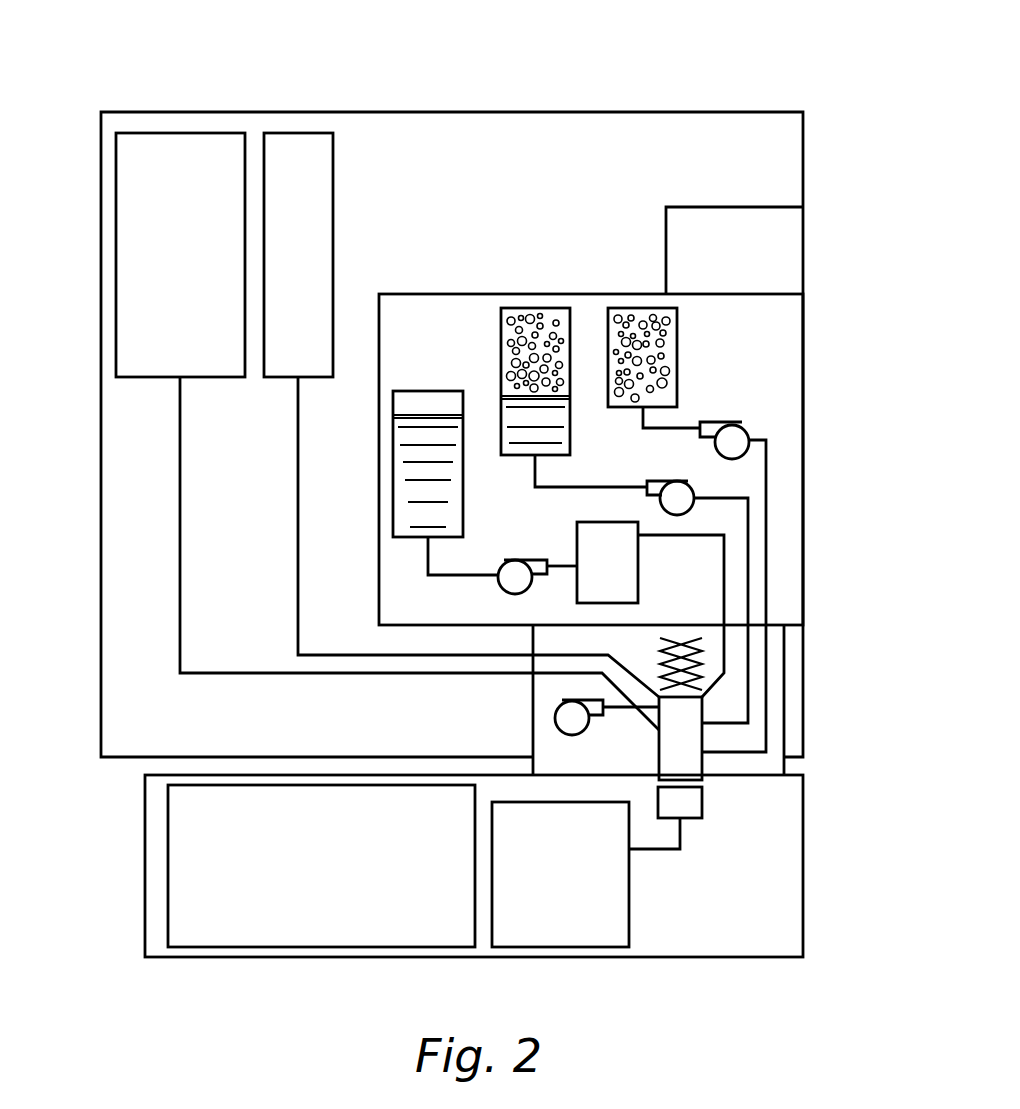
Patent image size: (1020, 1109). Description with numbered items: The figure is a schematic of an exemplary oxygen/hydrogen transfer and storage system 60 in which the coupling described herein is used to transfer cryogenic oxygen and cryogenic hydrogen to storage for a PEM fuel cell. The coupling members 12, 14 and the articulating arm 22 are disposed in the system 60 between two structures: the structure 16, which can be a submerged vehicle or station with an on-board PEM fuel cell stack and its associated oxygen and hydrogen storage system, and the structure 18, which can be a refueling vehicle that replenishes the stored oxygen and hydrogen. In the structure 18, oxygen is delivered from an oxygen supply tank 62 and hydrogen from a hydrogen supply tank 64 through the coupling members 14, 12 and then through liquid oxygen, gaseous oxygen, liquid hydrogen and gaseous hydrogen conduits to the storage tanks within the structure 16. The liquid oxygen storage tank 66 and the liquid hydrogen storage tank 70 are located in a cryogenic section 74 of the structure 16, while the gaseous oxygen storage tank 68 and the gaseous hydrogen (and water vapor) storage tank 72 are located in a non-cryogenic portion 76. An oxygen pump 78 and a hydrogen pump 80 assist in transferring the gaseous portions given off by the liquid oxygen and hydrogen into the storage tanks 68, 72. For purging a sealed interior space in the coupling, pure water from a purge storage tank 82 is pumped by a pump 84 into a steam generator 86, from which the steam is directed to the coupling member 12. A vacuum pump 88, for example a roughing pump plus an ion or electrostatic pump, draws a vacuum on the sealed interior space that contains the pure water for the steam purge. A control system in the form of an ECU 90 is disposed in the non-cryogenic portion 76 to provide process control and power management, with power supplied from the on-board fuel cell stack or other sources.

The oxygen/hydrogen transfer and storage system 60 is at (679, 84).
The cryogenic section 74 is at (153, 450).
The liquid hydrogen storage tank 70 is at (187, 188).
The liquid oxygen storage tank 66 is at (297, 166).
The non-cryogenic portion 76 is at (752, 358).
The ECU (electronic control unit) 90 is at (750, 247).
The purge storage tank 82 is at (430, 390).
The gaseous hydrogen (and water vapor) storage tank 72 is at (522, 314).
The gaseous oxygen storage tank 68 is at (647, 318).
The oxygen pump 78 is at (722, 430).
The hydrogen pump 80 is at (674, 487).
The pump 84 is at (532, 563).
The steam generator 86 is at (630, 563).
The structure 16 is at (805, 683).
The articulating arm 22 is at (700, 653).
The vacuum pump 88 is at (580, 725).
The coupling member 12 is at (688, 733).
The coupling member 14 is at (688, 799).
The structure 18 is at (803, 887).
The hydrogen supply tank 64 is at (222, 848).
The oxygen supply tank 62 is at (587, 928).